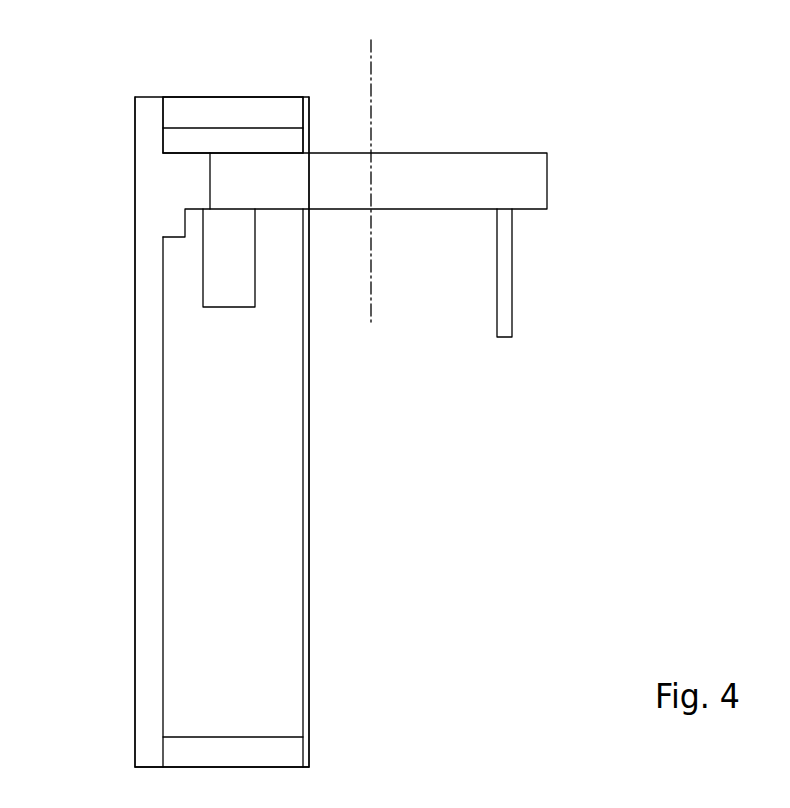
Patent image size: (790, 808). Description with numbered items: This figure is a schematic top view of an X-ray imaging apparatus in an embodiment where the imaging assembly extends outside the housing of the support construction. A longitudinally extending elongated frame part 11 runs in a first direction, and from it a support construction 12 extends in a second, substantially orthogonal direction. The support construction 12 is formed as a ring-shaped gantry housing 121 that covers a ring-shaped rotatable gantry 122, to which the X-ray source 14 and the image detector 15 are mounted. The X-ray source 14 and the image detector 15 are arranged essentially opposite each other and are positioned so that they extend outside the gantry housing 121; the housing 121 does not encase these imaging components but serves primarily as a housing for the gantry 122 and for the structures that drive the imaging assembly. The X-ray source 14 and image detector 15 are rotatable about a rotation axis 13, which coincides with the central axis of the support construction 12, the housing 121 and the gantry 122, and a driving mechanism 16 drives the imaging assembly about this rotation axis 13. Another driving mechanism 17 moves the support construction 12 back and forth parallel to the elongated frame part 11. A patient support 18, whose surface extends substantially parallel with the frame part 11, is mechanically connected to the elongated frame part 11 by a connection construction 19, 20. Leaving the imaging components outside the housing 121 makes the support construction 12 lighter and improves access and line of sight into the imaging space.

The elongated frame part 11 is at (147, 327).
The support construction 12 is at (520, 135).
The ring-shaped rotatable gantry 122 is at (414, 243).
The gantry housing 121 is at (540, 190).
The rotation axis 13 is at (380, 85).
The X-ray source 14 is at (212, 272).
The image detector 15 is at (508, 288).
The driving mechanism 16 is at (132, 163).
The second driving mechanism 17 is at (107, 742).
The patient support 18 is at (307, 418).
The connection construction 19 is at (267, 108).
The connection construction 20 is at (290, 757).